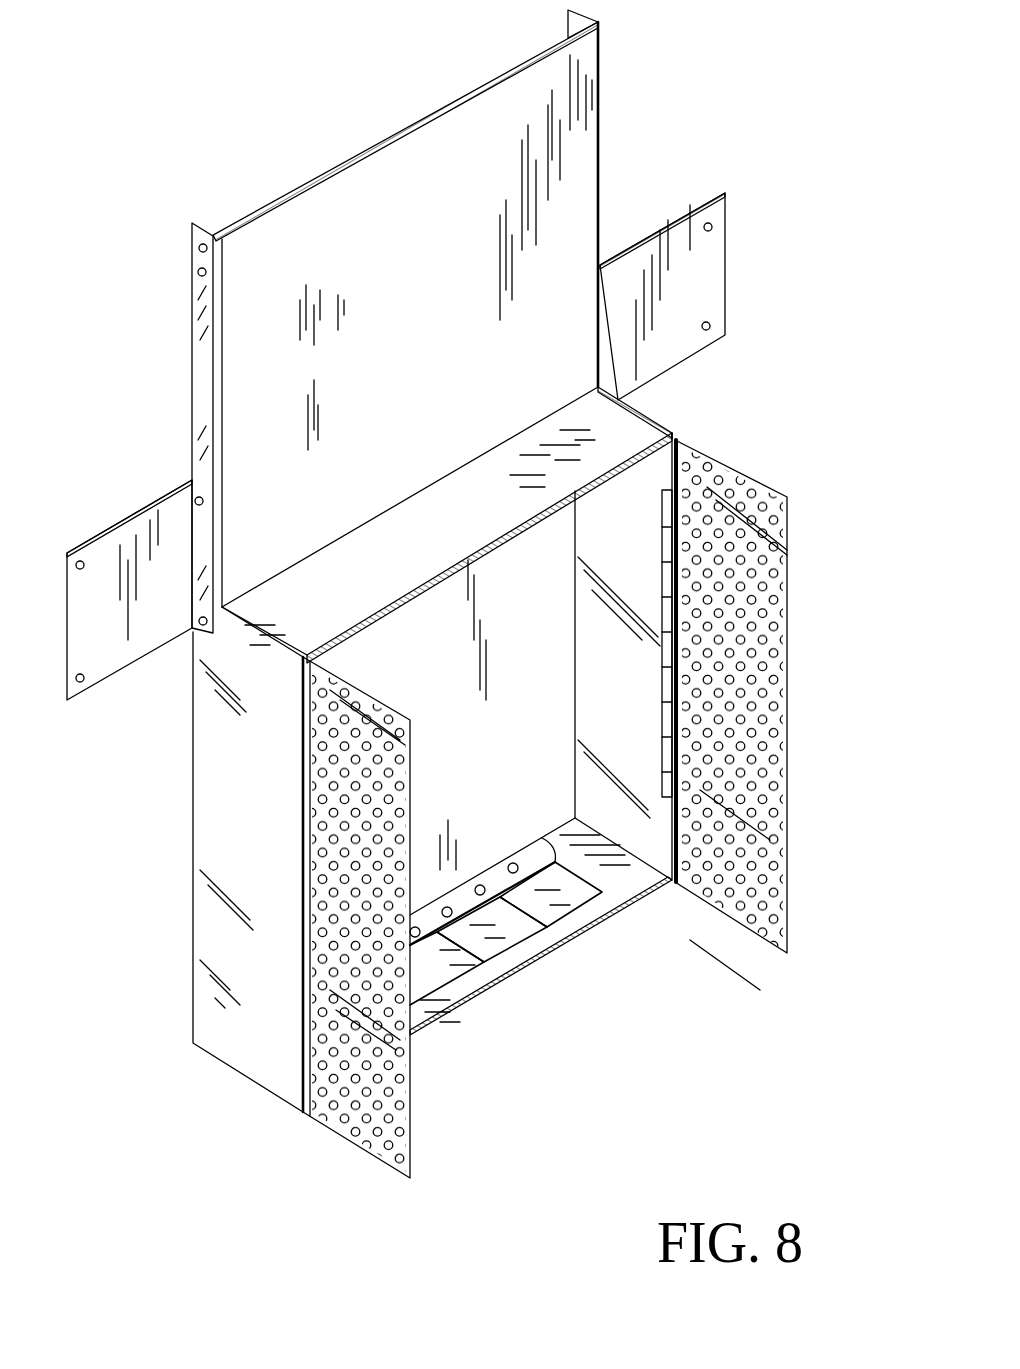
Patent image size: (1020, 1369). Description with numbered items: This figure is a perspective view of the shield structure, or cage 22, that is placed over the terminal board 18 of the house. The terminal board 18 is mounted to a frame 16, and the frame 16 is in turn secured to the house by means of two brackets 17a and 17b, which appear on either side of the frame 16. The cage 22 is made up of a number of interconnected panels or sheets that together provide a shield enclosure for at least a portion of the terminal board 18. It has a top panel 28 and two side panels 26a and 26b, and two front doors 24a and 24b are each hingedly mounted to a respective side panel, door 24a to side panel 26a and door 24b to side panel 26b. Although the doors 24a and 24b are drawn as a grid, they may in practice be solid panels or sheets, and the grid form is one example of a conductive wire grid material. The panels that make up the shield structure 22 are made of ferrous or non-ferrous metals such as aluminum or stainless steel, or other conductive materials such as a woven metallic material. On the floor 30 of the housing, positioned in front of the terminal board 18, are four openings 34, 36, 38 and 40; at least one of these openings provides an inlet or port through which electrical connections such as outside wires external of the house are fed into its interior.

The frame 16 is at (197, 320).
The terminal board 18 is at (244, 449).
The bracket 17a is at (67, 670).
The bracket 17b is at (727, 242).
The cage 22 is at (168, 898).
The top panel 28 is at (634, 428).
The floor 30 is at (635, 903).
The side panel 26a is at (193, 981).
The side panel 26b is at (647, 697).
The front door 24a is at (410, 1135).
The front door 24b is at (787, 657).
The opening 34 is at (418, 993).
The opening 36 is at (463, 963).
The opening 38 is at (517, 933).
The opening 40 is at (570, 903).